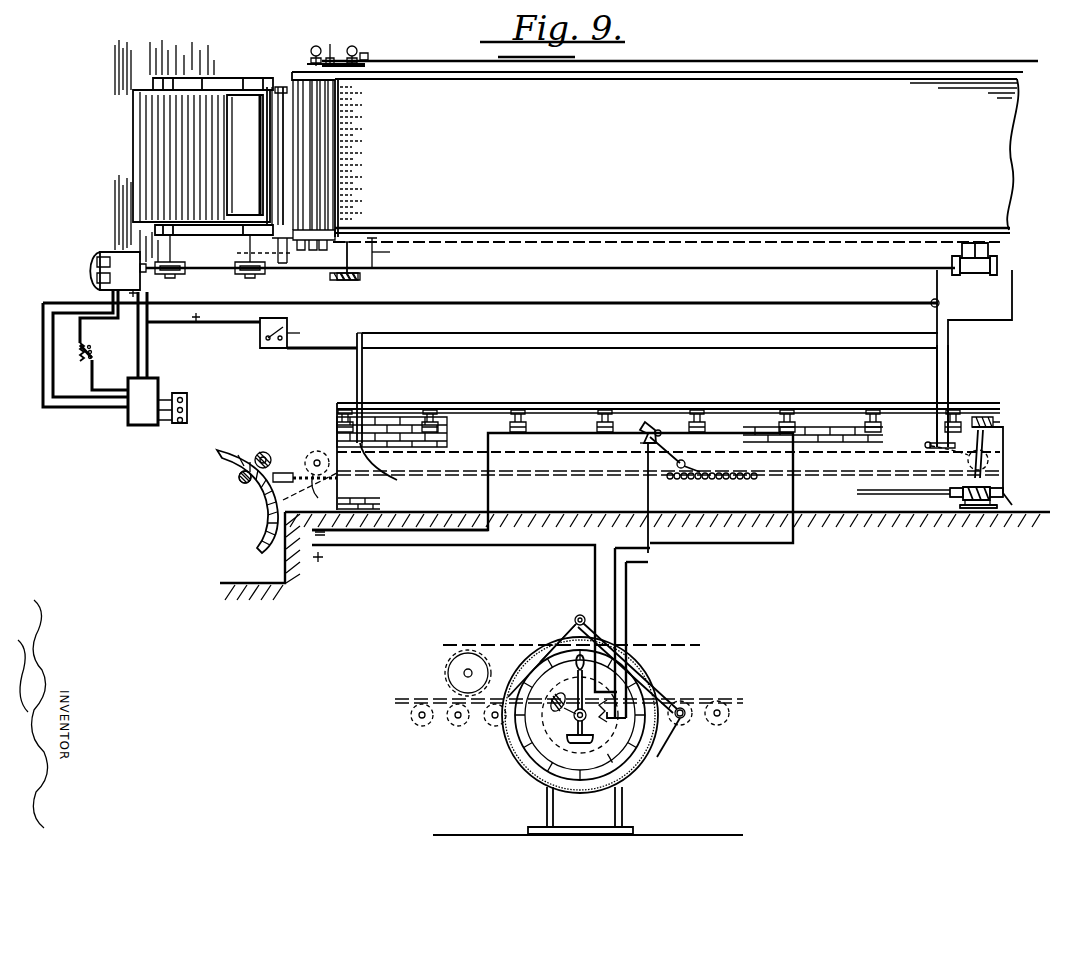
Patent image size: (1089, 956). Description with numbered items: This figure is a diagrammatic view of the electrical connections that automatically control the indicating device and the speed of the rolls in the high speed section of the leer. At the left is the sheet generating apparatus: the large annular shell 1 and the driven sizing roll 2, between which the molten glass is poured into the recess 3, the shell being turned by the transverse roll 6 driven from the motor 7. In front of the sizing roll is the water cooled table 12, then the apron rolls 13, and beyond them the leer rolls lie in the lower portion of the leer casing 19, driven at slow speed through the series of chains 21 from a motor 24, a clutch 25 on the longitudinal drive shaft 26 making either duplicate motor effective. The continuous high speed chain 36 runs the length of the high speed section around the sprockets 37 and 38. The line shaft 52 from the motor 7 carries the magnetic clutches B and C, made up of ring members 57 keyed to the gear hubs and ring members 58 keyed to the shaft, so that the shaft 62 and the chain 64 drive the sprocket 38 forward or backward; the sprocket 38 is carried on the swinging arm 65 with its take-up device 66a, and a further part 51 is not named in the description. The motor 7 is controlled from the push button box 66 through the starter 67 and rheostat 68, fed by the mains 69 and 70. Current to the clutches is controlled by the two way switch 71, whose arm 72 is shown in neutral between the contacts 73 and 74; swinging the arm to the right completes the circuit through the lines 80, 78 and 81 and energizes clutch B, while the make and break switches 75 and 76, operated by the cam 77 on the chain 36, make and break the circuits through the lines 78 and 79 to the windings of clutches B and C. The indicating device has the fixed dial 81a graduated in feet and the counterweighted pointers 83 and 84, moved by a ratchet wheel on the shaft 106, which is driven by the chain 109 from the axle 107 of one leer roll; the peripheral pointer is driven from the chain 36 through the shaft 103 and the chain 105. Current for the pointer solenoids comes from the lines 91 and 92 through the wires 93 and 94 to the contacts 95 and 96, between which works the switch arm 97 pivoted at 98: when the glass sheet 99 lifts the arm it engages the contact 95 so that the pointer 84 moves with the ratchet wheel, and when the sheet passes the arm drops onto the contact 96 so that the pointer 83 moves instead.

The annular shell 1 is at (158, 117).
The sizing roll 2 is at (263, 105).
The recess 3 is at (235, 112).
The transverse roll 6 is at (240, 481).
The motor 7 is at (118, 255).
The water cooled table 12 is at (283, 100).
The apron rolls 13 is at (310, 105).
The leer casing 19 is at (414, 97).
The chains 21 is at (682, 238).
The motor 24 is at (315, 47).
The clutch 25 is at (331, 46).
The longitudinal drive shaft 26 is at (445, 62).
The chain 36 is at (598, 242).
The sprocket 37 is at (312, 451).
The sprocket 38 is at (968, 462).
The base plate 51 is at (995, 509).
The line shaft 52 is at (655, 268).
The ring members 57 is at (962, 505).
The ring members 58 is at (955, 500).
The shaft 62 is at (973, 510).
The chain 64 is at (988, 478).
The swinging arm 65 is at (984, 432).
The push button box 66 is at (178, 432).
The take-up device 66a is at (997, 418).
The starter 67 is at (133, 425).
The rheostat 68 is at (63, 360).
The main 69 is at (137, 350).
The main 70 is at (150, 364).
The two way switch 71 is at (290, 323).
The switch arm 72 is at (277, 337).
The contact 73 is at (266, 342).
The contact 74 is at (291, 330).
The make and break switch 75 is at (391, 471).
The make and break switch 76 is at (935, 440).
The cam 77 is at (923, 446).
The line 78 is at (352, 335).
The line 79 is at (496, 349).
The line 80 is at (227, 324).
The line 81 is at (560, 302).
The fixed dial 81a is at (346, 280).
The pointer 83 is at (582, 677).
The pointer 84 is at (603, 742).
The line 91 is at (353, 548).
The line 92 is at (563, 432).
The wire 93 is at (632, 580).
The wire 94 is at (632, 575).
The contact 95 is at (642, 440).
The contact 96 is at (660, 430).
The switch arm 97 is at (646, 462).
The pivot 98 is at (683, 461).
The glass sheet 99 is at (722, 470).
The shaft 103 is at (580, 615).
The chain 105 is at (360, 277).
The shaft 106 is at (577, 718).
The axle 107 is at (377, 248).
The chain 109 is at (377, 258).
The magnetic clutch B is at (950, 258).
The magnetic clutch C is at (1009, 262).